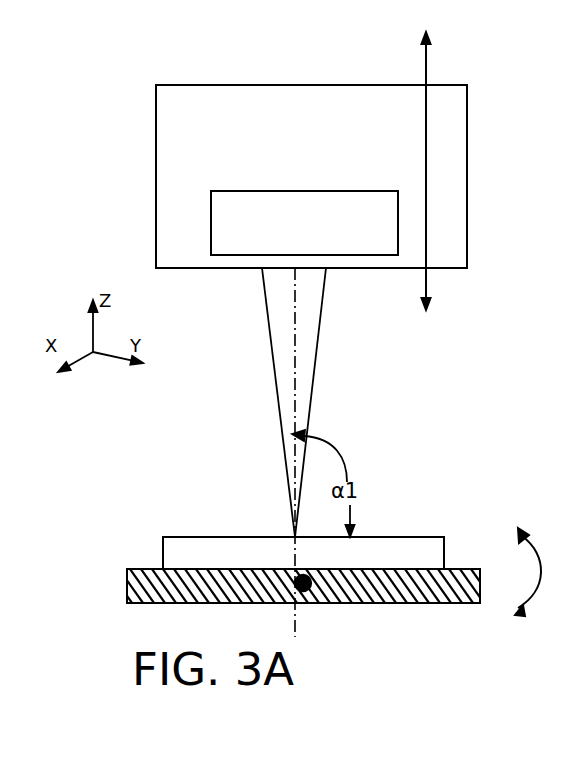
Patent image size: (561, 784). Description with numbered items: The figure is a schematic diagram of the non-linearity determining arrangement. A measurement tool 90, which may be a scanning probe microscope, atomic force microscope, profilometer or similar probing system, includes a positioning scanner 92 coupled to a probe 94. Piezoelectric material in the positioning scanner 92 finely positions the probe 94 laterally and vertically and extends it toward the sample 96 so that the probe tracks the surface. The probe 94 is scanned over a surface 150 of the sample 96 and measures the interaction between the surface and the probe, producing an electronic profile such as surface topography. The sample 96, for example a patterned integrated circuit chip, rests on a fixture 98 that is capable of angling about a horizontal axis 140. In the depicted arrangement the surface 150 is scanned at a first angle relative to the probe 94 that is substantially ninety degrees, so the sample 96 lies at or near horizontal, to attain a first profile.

The measurement tool 90 is at (311, 176).
The positioning scanner 92 is at (304, 223).
The probe 94 is at (253, 450).
The sample 96 is at (203, 557).
The fixture 98 is at (183, 575).
The horizontal axis 140 is at (324, 600).
The surface 150 is at (388, 537).